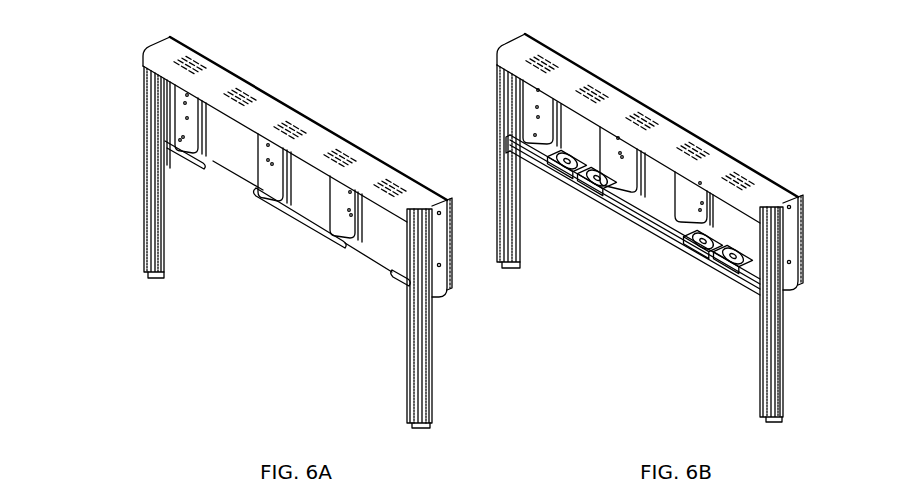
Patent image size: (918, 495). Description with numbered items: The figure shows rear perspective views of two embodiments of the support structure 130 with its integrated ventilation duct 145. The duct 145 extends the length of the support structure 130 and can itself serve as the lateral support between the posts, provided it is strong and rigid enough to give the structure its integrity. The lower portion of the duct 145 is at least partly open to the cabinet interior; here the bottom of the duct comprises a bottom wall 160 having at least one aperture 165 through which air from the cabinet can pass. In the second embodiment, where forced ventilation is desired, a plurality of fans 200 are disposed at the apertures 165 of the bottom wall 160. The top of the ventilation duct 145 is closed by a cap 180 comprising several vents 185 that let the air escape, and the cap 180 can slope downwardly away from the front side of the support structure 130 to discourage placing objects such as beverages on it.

In FIG. 6A, the support structure 130 is at (103, 72).
In FIG. 6B, the support structure 130 is at (817, 139).
In FIG. 6A, the cap 180 is at (177, 52).
In FIG. 6B, the cap 180 is at (530, 47).
In FIG. 6A, the vents 185 is at (255, 94).
In FIG. 6B, the vents 185 is at (605, 93).
In FIG. 6A, the ventilation duct 145 is at (433, 297).
In FIG. 6B, the ventilation duct 145 is at (783, 290).
In FIG. 6A, the aperture 165 is at (232, 186).
In FIG. 6A, the bottom wall 160 is at (347, 244).
In FIG. 6B, the bottom wall 160 is at (640, 211).
In FIG. 6B, the fans 200 is at (583, 184).